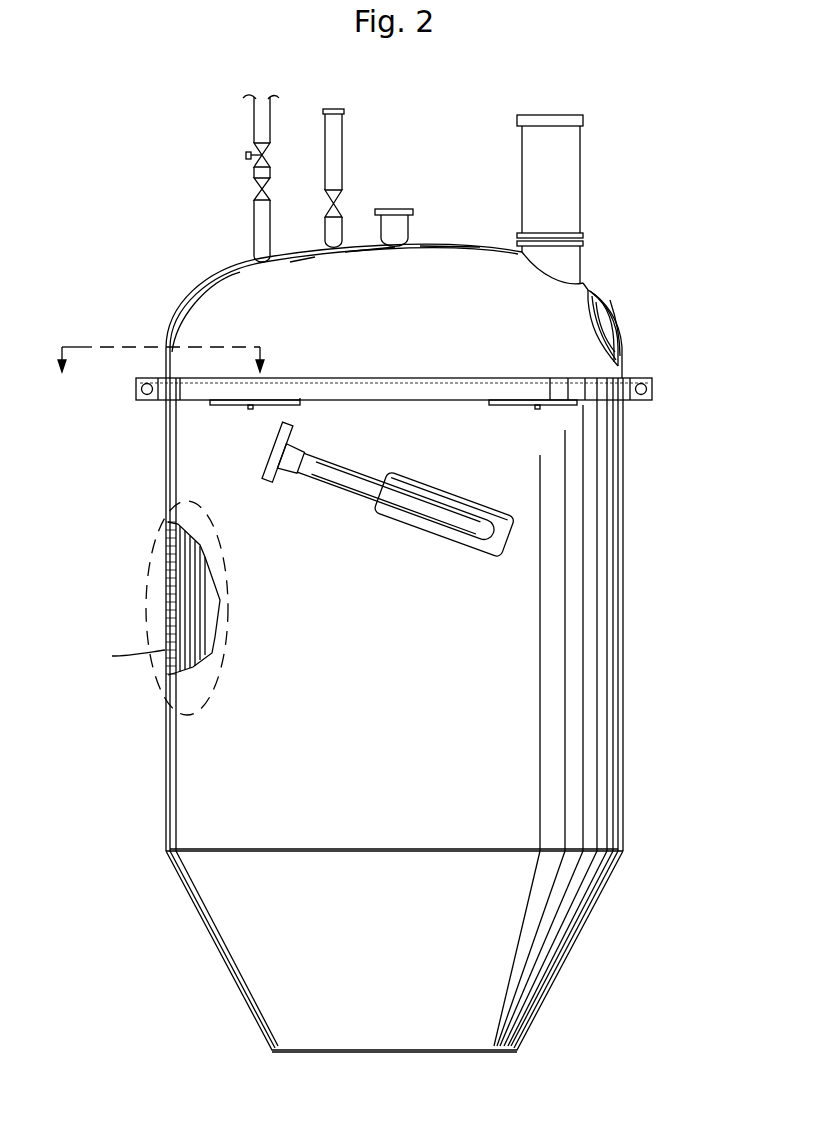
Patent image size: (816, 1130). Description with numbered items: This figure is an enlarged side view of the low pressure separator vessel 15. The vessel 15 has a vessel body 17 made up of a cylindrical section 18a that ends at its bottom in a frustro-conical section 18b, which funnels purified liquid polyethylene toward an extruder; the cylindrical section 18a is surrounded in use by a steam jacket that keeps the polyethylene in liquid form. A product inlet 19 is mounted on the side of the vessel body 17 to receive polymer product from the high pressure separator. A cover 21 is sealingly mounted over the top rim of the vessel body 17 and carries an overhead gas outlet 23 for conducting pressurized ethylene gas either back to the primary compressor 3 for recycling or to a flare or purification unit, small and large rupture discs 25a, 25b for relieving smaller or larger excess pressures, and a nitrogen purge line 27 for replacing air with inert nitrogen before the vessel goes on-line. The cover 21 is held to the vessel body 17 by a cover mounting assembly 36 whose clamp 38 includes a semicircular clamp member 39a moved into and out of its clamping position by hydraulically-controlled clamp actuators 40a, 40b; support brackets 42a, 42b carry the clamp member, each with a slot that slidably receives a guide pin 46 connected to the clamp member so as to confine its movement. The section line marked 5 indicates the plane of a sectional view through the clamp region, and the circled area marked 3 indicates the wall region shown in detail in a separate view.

The separator vessel 15 is at (118, 262).
The vessel body 17 is at (455, 689).
The cylindrical section 18a is at (628, 680).
The frustro-conical section 18b is at (572, 950).
The product inlet 19 is at (358, 487).
The cover 21 is at (455, 309).
The overhead gas outlet 23 is at (395, 208).
The small rupture disc 25a is at (343, 128).
The large rupture disc 25b is at (583, 168).
The nitrogen purge line 27 is at (254, 118).
The cover mounting assembly 36 is at (131, 391).
The clamp 38 is at (455, 365).
The semicircular clamp member 39a is at (458, 400).
The clamp actuator 40a is at (140, 410).
The clamp actuator 40b is at (650, 405).
The support bracket 42a is at (270, 406).
The support bracket 42b is at (567, 406).
The guide pin 46 is at (538, 410).
The primary compressor 3 is at (157, 608).
The section line 5- 5 is at (160, 342).